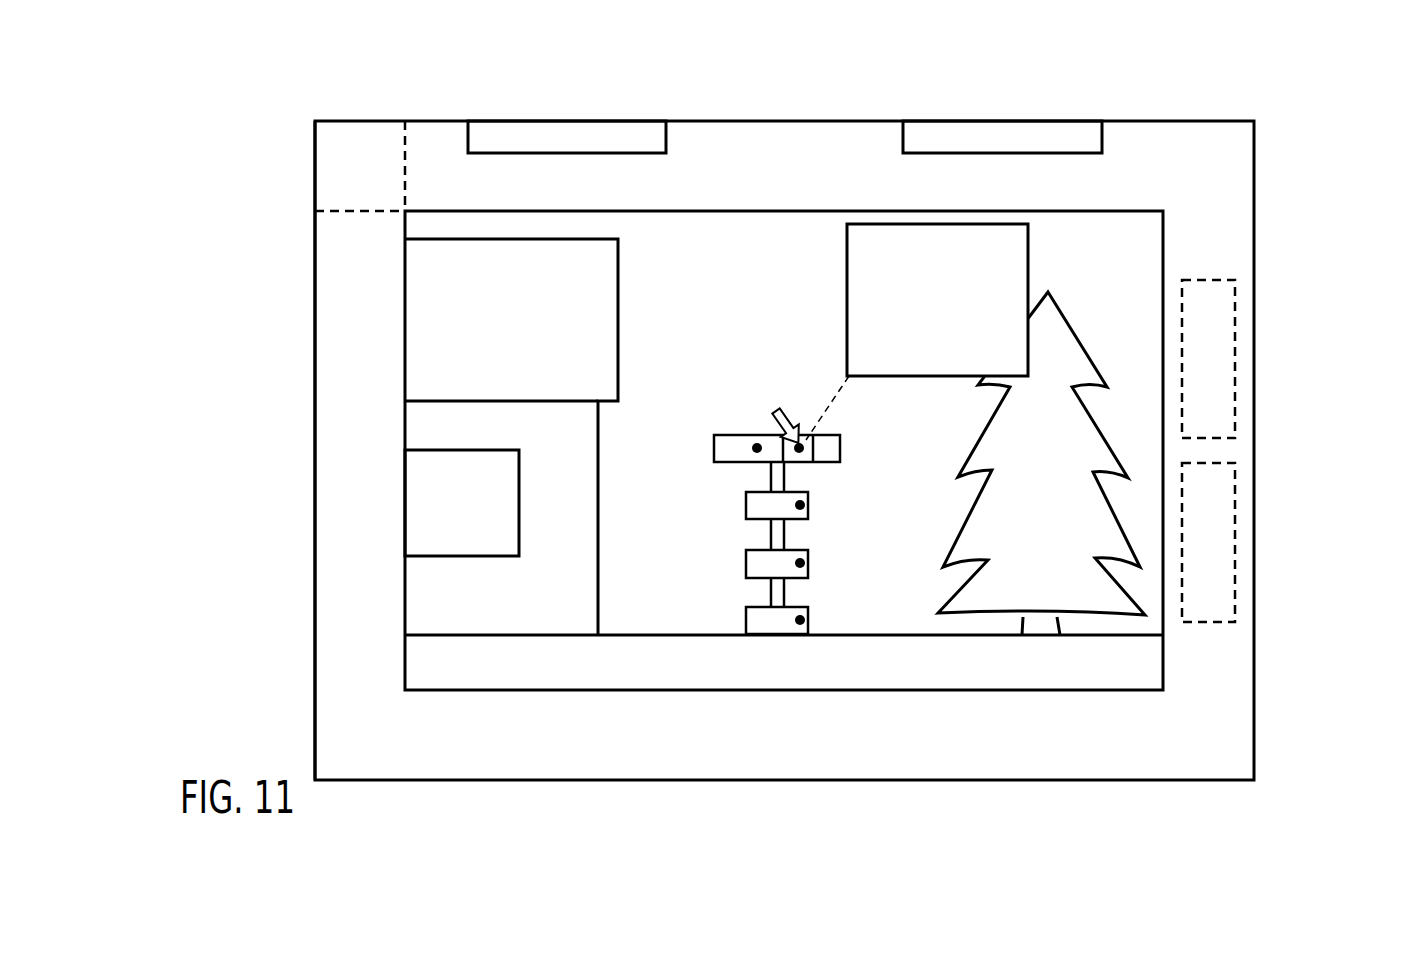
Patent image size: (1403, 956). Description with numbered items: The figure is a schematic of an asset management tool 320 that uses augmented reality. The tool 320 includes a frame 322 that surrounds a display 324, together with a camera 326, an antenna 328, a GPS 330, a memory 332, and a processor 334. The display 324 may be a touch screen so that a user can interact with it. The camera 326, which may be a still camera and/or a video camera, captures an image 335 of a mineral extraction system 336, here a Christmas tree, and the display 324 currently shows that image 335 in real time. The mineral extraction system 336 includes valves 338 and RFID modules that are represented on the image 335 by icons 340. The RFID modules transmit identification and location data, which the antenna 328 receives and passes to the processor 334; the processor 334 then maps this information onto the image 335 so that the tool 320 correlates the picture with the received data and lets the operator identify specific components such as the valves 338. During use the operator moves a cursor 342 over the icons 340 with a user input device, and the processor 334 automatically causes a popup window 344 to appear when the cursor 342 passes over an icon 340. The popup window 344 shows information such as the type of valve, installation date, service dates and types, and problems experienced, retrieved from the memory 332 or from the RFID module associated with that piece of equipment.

The asset management tool 320 is at (1283, 110).
The frame 322 is at (313, 447).
The display 324 is at (1150, 238).
The camera 326 is at (357, 134).
The antenna 328 is at (668, 137).
The GPS 330 is at (1104, 137).
The memory 332 is at (1222, 349).
The processor 334 is at (1222, 533).
The image 335 is at (718, 315).
The mineral extraction system 336 is at (858, 595).
The valves 338 is at (722, 447).
The icons 340 is at (757, 453).
The cursor 342 is at (775, 414).
The popup window 344 is at (1030, 243).